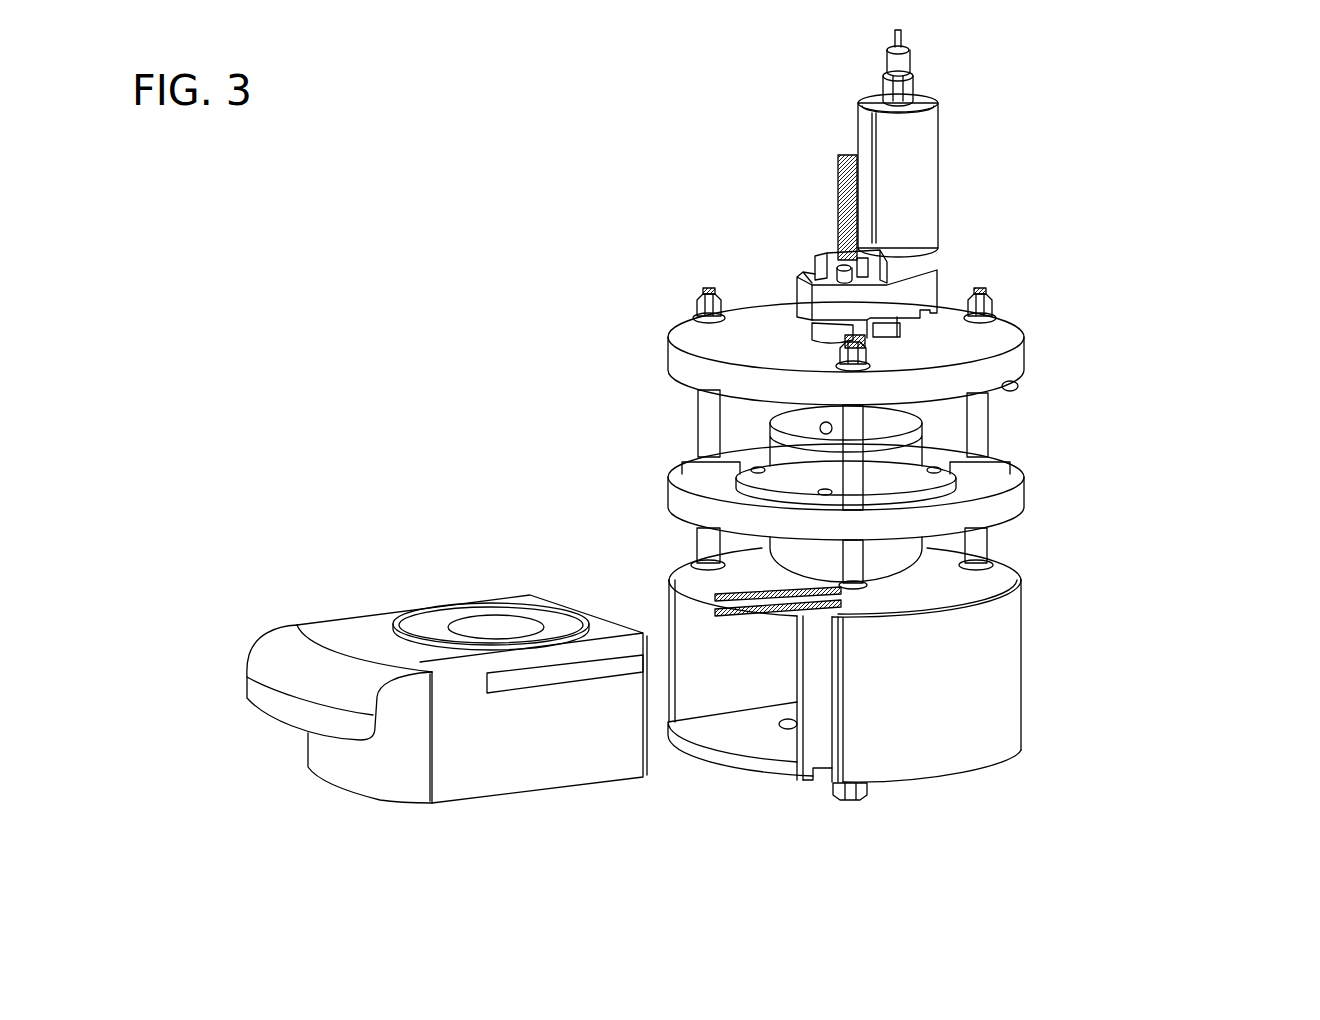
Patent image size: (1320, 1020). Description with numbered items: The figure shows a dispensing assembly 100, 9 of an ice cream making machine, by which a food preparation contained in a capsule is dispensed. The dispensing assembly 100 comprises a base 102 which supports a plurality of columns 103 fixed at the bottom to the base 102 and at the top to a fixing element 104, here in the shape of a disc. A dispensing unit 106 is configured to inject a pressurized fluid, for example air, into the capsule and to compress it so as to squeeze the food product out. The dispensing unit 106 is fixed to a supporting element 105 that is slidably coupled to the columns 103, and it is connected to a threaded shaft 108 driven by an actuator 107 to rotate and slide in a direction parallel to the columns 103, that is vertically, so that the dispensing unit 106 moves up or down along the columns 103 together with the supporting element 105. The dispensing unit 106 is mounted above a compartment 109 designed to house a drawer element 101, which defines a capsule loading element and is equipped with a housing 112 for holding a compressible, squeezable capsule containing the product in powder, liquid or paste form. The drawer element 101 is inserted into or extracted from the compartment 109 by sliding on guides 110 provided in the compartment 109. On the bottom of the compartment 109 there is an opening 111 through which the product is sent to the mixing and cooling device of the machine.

The dispensing assembly 100 is at (723, 446).
The tool 9 is at (723, 446).
The drawer element 101 is at (409, 622).
The base 102 is at (892, 684).
The columns 103 is at (710, 435).
The fixing element 104 is at (983, 375).
The supporting element 105 is at (1000, 508).
The dispensing unit 106 is at (880, 470).
The actuator 107 is at (915, 177).
The threaded shaft 108 is at (838, 196).
The compartment 109 is at (733, 688).
The guides 110 is at (733, 610).
The opening 111 is at (785, 720).
The housing 112 is at (478, 627).